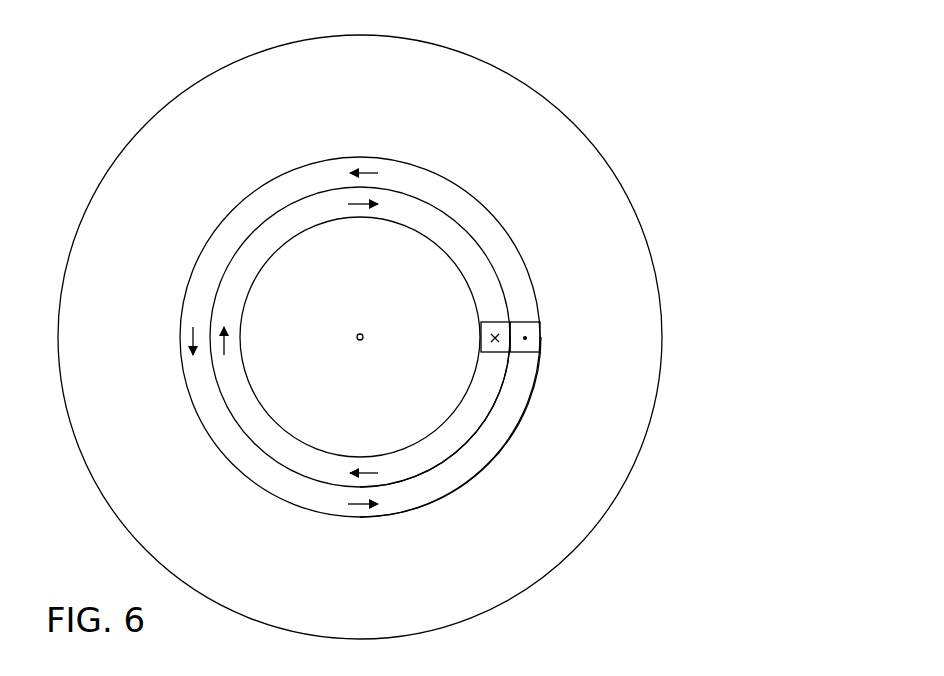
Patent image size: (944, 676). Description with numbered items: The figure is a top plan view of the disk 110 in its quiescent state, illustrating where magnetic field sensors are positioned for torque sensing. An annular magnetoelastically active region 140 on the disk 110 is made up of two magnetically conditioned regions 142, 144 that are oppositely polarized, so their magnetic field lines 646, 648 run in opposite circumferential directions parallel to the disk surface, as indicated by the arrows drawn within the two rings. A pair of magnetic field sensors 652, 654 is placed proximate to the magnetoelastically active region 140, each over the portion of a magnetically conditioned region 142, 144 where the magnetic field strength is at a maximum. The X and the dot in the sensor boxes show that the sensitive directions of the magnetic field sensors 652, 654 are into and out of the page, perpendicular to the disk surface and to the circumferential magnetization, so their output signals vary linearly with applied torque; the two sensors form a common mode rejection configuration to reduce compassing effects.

The disk 110 is at (534, 65).
The magnetoelastically active region 140 is at (518, 232).
The magnetically conditioned region 142 is at (412, 458).
The magnetically conditioned region 144 is at (493, 433).
The magnetic field lines 646 is at (365, 210).
The magnetic field lines 648 is at (365, 165).
The magnetic field sensor 652 is at (485, 338).
The magnetic field sensor 654 is at (535, 337).